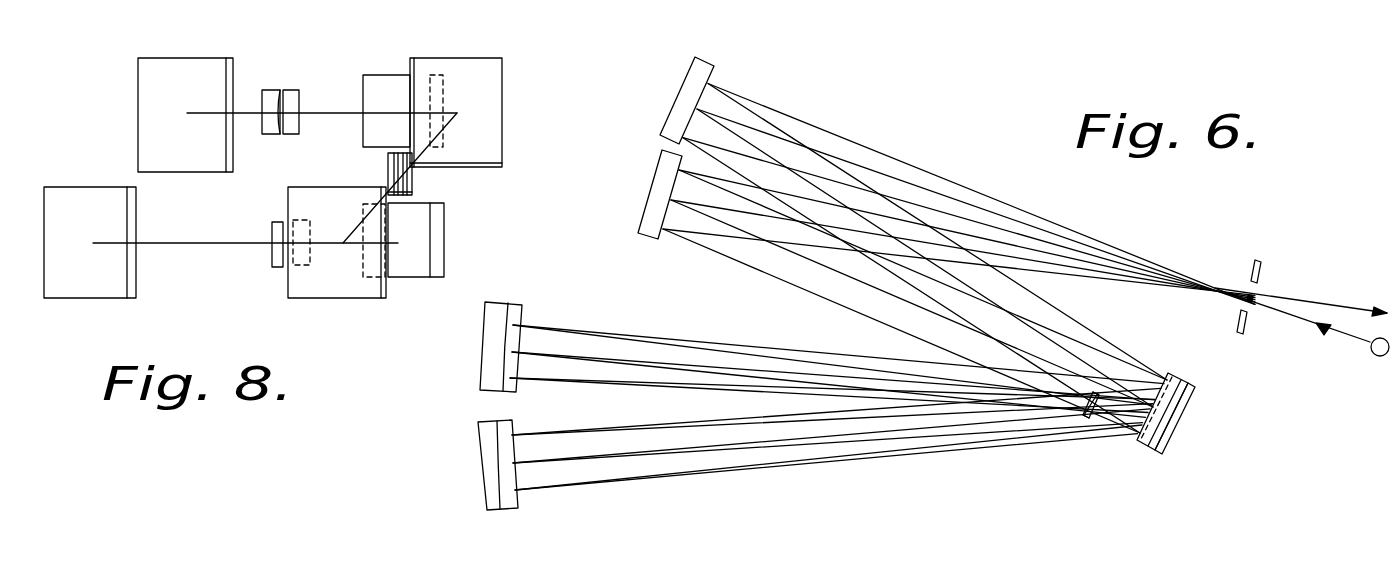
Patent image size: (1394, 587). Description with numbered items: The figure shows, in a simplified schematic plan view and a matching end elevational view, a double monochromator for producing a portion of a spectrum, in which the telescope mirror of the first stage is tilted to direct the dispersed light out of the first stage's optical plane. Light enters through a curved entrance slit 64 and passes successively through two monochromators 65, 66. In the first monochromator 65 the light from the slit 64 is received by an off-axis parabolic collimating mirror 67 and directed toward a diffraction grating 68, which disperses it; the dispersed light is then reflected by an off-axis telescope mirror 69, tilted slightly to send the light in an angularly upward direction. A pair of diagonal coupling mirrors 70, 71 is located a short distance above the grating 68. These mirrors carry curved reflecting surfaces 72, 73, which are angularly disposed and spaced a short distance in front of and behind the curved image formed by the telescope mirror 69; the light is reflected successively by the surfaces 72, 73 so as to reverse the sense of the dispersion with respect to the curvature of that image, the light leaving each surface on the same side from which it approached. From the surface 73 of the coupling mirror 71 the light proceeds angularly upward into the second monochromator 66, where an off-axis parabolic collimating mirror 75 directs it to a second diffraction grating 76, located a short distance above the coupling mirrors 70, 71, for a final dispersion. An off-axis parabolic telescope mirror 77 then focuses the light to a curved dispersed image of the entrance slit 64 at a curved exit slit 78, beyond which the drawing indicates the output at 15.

In FIG. 6, the observer eye 15 is at (1374, 354).
In FIG. 8, the curved entrance slit 64 is at (272, 238).
In FIG. 6, the curved entrance slit 64 is at (1253, 300).
In FIG. 8, the first monochromator 65 is at (447, 243).
In FIG. 8, the second monochromator 66 is at (516, 80).
In FIG. 8, the off-axis parabolic collimating mirror 67 is at (80, 290).
In FIG. 6, the off-axis parabolic collimating mirror 67 is at (696, 64).
In FIG. 8, the diffraction grating 68 is at (438, 277).
In FIG. 6, the diffraction grating 68 is at (1190, 400).
In FIG. 8, the off-axis telescope mirror 69 is at (316, 298).
In FIG. 6, the off-axis telescope mirror 69 is at (485, 370).
In FIG. 8, the diagonal coupling mirror 70 is at (388, 166).
In FIG. 6, the diagonal coupling mirror 70 is at (1099, 392).
In FIG. 8, the diagonal coupling mirror 71 is at (406, 192).
In FIG. 6, the diagonal coupling mirror 71 is at (1092, 420).
In FIG. 8, the curved reflecting surface 72 is at (389, 156).
In FIG. 6, the curved reflecting surface 72 is at (1098, 393).
In FIG. 8, the curved reflecting surface 73 is at (410, 180).
In FIG. 6, the curved reflecting surface 73 is at (1084, 415).
In FIG. 8, the off-axis parabolic collimating mirror 75 is at (497, 113).
In FIG. 6, the off-axis parabolic collimating mirror 75 is at (490, 483).
In FIG. 8, the second diffraction grating 76 is at (372, 75).
In FIG. 6, the second diffraction grating 76 is at (1178, 447).
In FIG. 8, the off-axis parabolic telescope mirror 77 is at (138, 70).
In FIG. 6, the off-axis parabolic telescope mirror 77 is at (650, 233).
In FIG. 8, the curved exit slit 78 is at (283, 92).
In FIG. 6, the curved exit slit 78 is at (1262, 282).